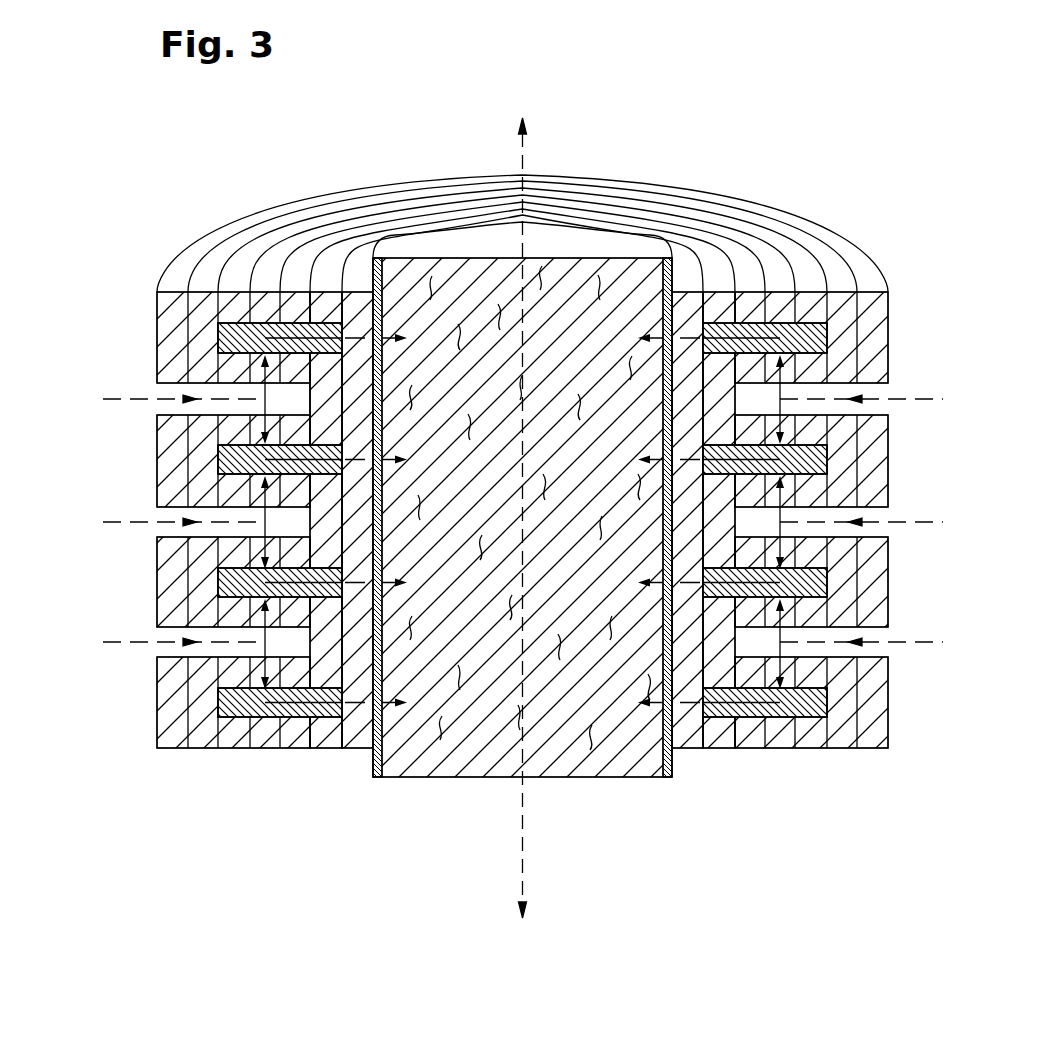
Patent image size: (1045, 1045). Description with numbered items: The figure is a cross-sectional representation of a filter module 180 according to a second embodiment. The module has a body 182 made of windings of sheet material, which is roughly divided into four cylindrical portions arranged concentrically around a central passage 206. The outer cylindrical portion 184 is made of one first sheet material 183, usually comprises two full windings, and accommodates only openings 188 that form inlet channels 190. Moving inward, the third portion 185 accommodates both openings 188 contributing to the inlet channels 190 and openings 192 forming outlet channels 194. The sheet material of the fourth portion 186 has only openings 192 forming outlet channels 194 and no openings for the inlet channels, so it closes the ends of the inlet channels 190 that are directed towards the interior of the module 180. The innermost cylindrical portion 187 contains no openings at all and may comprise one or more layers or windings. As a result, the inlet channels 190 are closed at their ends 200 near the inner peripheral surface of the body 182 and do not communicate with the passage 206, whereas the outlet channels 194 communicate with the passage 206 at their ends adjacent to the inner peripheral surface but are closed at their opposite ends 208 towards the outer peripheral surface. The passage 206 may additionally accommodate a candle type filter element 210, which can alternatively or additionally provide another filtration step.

The module 180 is at (760, 90).
The body 182 is at (110, 312).
The first sheet material 183 is at (170, 705).
The outer cylindrical portion 184 is at (217, 778).
The third portion 185 is at (310, 778).
The fourth portion 186 is at (341, 778).
The innermost cylindrical portion 187 is at (343, 778).
The openings 188 is at (158, 537).
The inlet channels 190 is at (145, 410).
The openings 192 is at (803, 712).
The outlet channels 194 is at (756, 722).
The ends 200 is at (310, 398).
The passage 206 is at (470, 800).
The ends 208 is at (215, 585).
The candle type filter element 210 is at (585, 293).